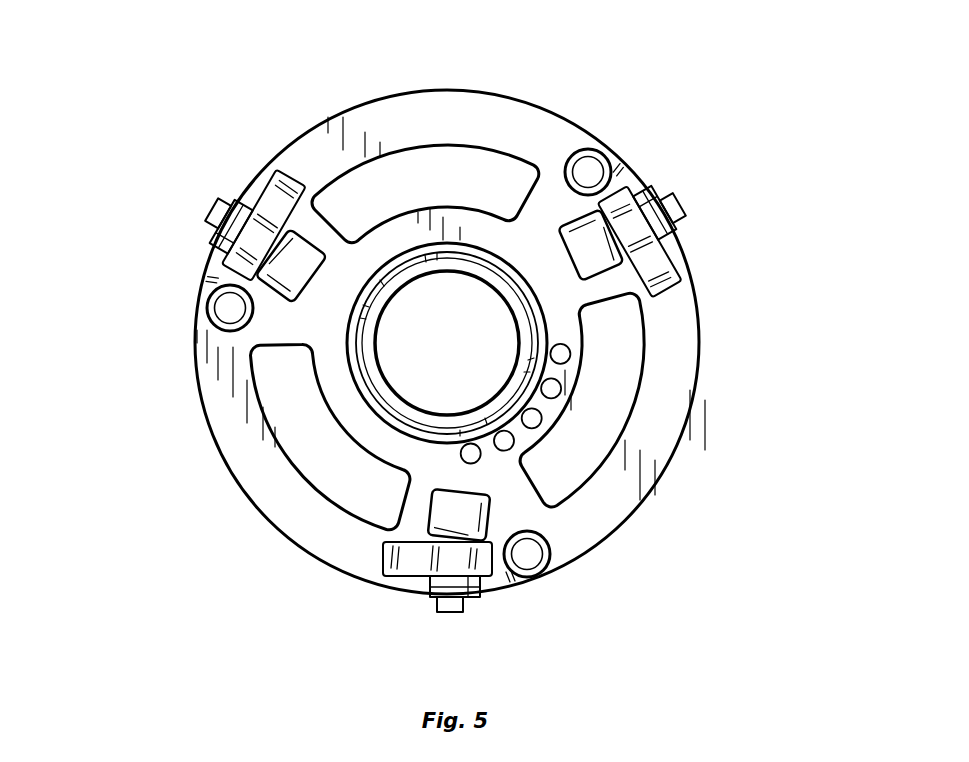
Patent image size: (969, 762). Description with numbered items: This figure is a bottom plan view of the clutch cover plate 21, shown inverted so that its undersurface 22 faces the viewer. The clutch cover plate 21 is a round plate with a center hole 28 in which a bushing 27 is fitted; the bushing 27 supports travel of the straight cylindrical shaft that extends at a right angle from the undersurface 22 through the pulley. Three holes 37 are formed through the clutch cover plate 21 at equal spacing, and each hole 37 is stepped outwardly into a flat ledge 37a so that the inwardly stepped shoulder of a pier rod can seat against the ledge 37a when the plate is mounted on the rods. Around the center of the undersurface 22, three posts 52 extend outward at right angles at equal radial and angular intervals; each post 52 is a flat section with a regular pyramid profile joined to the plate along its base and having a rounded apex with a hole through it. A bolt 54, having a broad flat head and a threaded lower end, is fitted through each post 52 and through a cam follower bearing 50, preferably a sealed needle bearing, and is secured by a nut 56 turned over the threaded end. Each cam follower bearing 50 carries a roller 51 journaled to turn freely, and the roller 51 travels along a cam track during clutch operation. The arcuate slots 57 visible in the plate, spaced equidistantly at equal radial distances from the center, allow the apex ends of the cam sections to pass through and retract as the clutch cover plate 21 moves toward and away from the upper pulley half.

The clutch cover plate 21 is at (732, 228).
The undersurface 22 is at (488, 117).
The bushing 27 is at (508, 328).
The center hole 28 is at (503, 255).
The holes 37 is at (532, 556).
The flat ledge 37a is at (549, 538).
The cam follower bearing 50 is at (420, 588).
The roller 51 is at (452, 512).
The post 52 is at (447, 561).
The bolt 54 is at (452, 613).
The nut 56 is at (470, 596).
The arcuate slot 57 is at (432, 168).